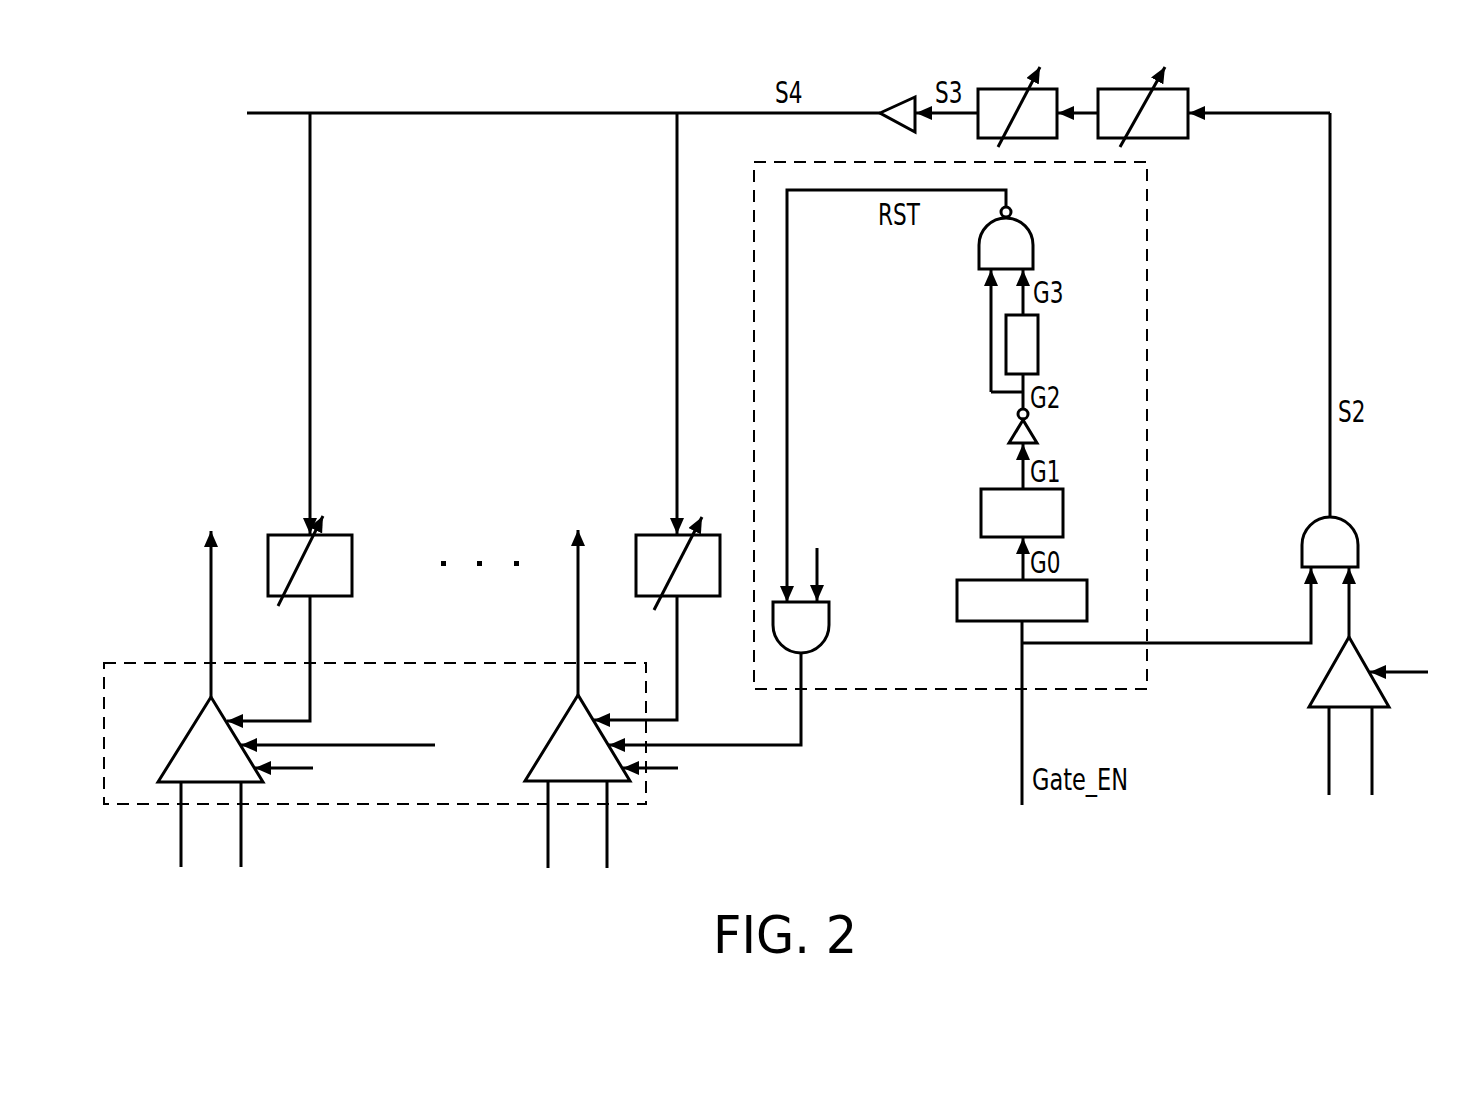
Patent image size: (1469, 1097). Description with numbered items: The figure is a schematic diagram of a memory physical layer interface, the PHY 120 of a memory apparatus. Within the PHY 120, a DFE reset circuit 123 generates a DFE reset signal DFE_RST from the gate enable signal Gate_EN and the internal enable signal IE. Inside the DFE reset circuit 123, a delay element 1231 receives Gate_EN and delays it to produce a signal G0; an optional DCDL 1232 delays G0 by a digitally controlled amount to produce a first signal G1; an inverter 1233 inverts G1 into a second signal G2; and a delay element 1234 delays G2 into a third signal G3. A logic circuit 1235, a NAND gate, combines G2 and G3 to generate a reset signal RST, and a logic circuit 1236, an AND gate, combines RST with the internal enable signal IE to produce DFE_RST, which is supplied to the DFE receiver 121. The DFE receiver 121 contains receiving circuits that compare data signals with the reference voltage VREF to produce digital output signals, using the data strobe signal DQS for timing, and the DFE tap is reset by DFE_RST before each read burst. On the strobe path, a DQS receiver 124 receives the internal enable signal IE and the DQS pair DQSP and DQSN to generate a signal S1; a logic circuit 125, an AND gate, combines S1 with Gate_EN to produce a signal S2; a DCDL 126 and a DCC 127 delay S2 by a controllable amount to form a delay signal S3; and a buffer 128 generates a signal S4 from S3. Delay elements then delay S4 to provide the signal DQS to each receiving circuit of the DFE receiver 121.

The memory physical layer interface (PHY) 120 is at (1460, 900).
The DFE receiver 121 is at (375, 808).
The DFE reset circuit 123 is at (1150, 283).
The DQS receiver 124 is at (1326, 677).
The logic circuit 125 is at (1312, 520).
The DCDL 126 is at (1185, 87).
The DCC (duty-cycle corrector) 127 is at (1048, 88).
The buffer 128 is at (897, 101).
The delay element 1231 is at (975, 580).
The digitally controlled delay line (DCDL) 1232 is at (981, 513).
The inverter 1233 is at (1037, 432).
The delay element 1234 is at (1038, 345).
The logic circuit 1235 is at (1033, 247).
The logic circuit 1236 is at (829, 631).